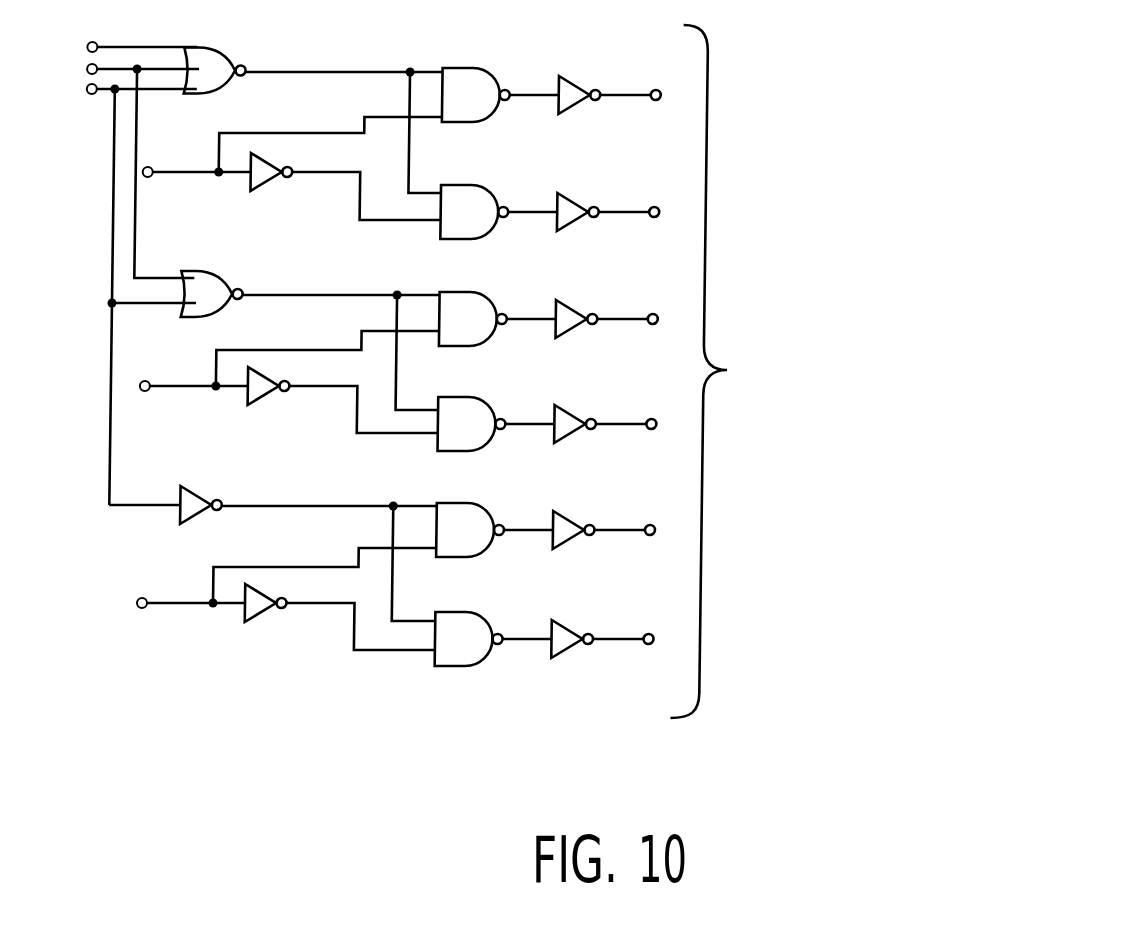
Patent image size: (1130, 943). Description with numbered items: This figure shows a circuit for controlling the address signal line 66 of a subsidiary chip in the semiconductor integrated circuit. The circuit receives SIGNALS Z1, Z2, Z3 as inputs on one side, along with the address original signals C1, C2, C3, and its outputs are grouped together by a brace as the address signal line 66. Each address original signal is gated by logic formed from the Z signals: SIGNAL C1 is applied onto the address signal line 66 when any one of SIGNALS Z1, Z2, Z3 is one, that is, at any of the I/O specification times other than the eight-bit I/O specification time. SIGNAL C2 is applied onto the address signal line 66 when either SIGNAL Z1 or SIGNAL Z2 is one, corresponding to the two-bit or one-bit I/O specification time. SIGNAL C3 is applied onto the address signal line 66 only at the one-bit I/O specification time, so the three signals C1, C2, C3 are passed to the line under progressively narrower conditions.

The address signal line 66 is at (884, 371).
The SIGNAL Z1 is at (121, 37).
The SIGNAL Z2 is at (120, 165).
The SIGNAL Z3 is at (119, 294).
The address original signal C1 is at (292, 168).
The address original signal C2 is at (289, 382).
The address original signal C3 is at (286, 599).